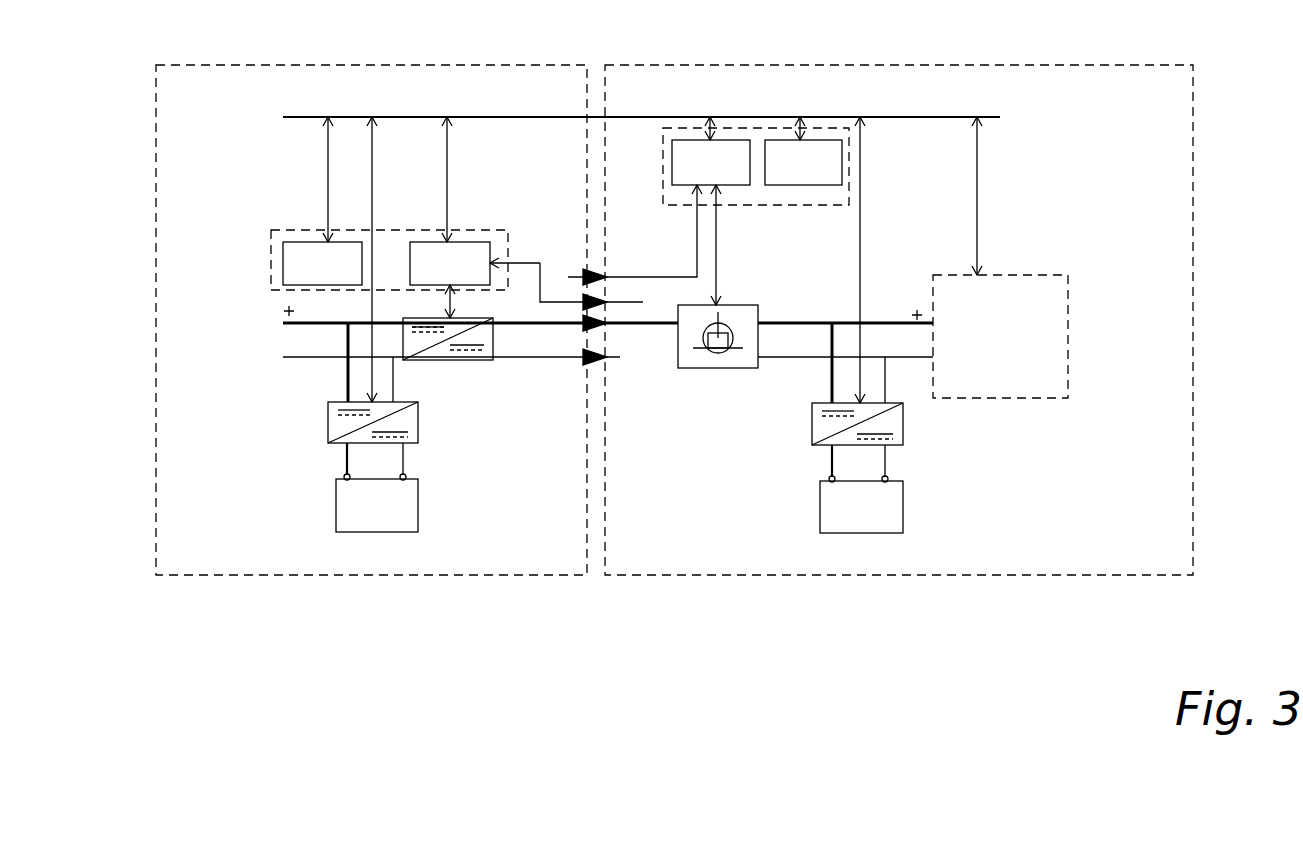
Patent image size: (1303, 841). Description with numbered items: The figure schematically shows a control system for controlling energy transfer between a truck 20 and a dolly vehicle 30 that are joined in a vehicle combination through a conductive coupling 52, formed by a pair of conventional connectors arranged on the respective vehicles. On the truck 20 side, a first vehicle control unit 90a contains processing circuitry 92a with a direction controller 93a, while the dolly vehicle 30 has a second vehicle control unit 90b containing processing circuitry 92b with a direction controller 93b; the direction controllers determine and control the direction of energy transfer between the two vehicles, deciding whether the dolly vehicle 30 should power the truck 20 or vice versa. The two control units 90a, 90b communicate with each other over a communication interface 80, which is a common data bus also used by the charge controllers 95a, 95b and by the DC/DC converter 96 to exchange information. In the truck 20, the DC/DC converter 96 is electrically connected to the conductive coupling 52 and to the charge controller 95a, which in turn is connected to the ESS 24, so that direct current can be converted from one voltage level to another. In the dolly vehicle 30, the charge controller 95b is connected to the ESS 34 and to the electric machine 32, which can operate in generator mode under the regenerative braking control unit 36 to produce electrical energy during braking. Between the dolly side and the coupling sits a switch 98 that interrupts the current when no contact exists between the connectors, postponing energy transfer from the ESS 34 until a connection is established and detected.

The truck 20 is at (108, 119).
The dolly vehicle 30 is at (1193, 117).
The communication interface 80 is at (592, 117).
The first vehicle control unit 90a is at (355, 221).
The processing circuitry 92a is at (300, 242).
The direction controller 93a is at (478, 242).
The second vehicle control unit 90b is at (774, 174).
The processing circuitry 92b is at (825, 140).
The direction controller 93b is at (731, 140).
The DC/DC converter 96 is at (468, 360).
The charge controller 95a is at (345, 425).
The charge controller 95b is at (903, 422).
The ESS 24 is at (418, 512).
The ESS 34 is at (903, 505).
The conductive coupling 52 is at (597, 359).
The switch 98 is at (712, 368).
The electric machine 32 is at (1058, 336).
The regenerative braking control unit 36 is at (1068, 340).